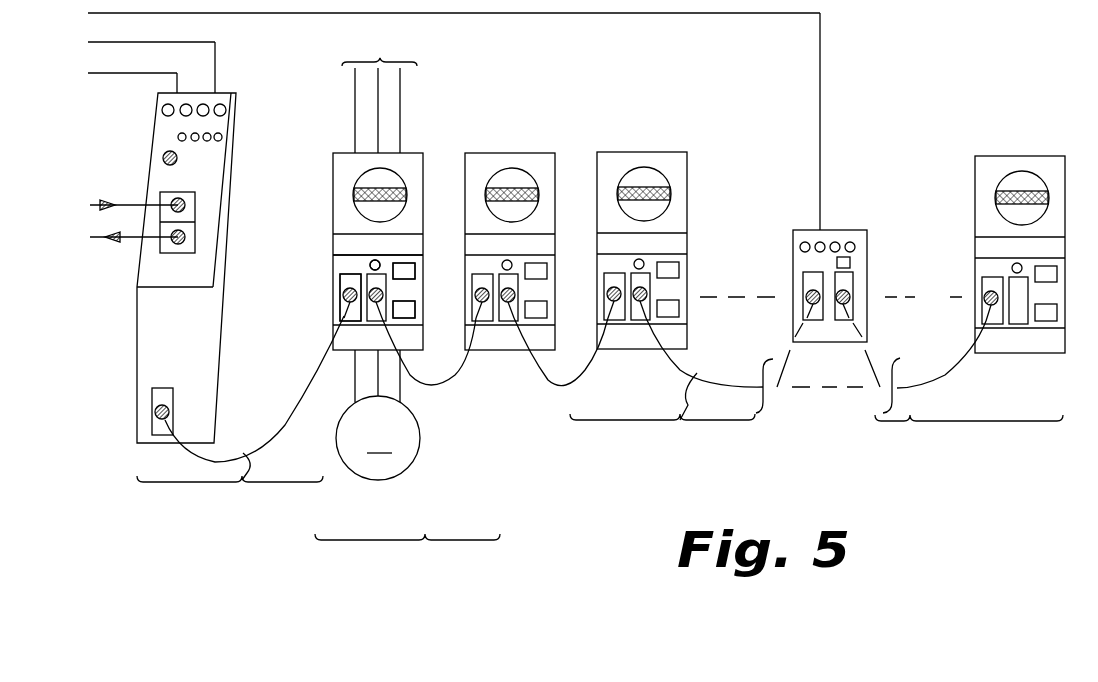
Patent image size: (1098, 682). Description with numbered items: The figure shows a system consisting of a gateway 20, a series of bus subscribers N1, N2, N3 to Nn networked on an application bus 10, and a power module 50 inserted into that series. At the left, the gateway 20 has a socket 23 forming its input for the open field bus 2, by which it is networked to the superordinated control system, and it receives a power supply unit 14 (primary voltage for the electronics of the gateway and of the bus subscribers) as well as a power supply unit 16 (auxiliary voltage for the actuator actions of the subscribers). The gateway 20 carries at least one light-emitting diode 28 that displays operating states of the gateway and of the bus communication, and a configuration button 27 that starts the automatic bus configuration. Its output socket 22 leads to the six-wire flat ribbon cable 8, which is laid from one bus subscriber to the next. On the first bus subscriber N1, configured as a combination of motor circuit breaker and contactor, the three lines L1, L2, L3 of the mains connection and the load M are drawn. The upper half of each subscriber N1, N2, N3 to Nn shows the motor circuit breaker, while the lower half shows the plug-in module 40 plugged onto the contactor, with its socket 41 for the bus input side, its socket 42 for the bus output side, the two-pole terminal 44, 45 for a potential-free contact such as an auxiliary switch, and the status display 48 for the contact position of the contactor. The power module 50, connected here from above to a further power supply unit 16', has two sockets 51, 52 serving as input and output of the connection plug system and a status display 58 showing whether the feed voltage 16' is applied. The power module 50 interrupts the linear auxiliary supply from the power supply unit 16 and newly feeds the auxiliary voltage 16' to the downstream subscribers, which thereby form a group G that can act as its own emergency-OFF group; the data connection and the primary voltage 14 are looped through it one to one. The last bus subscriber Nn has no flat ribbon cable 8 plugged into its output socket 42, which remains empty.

The open field bus 2 is at (84, 185).
The flat ribbon cable 8 is at (452, 377).
The application bus 10 is at (446, 445).
The power supply unit 14 is at (160, 73).
The power supply unit 16 is at (177, 67).
The power supply unit 16' is at (491, 121).
The gateway 20 is at (226, 181).
The socket 22 is at (157, 430).
The socket 23 is at (193, 203).
The configuration button 27 is at (162, 157).
The light-emitting diode 28 is at (210, 128).
The plug-in module 40 is at (337, 257).
The socket 41 is at (345, 283).
The socket 42 is at (360, 324).
The two-pole terminal 44 is at (410, 308).
The two-pole terminal 45 is at (415, 269).
The status display 48 is at (370, 261).
The power module 50 is at (860, 242).
The socket 51 is at (812, 283).
The socket 52 is at (847, 281).
The status display 58 is at (850, 265).
The first bus subscriber N1 is at (367, 250).
The second bus subscriber N2 is at (543, 157).
The third bus subscriber N3 is at (672, 162).
The last bus subscriber Nn is at (987, 163).
The line L1 is at (338, 90).
The line L2 is at (381, 90).
The line L3 is at (421, 90).
The load M is at (378, 415).
The group G is at (905, 328).